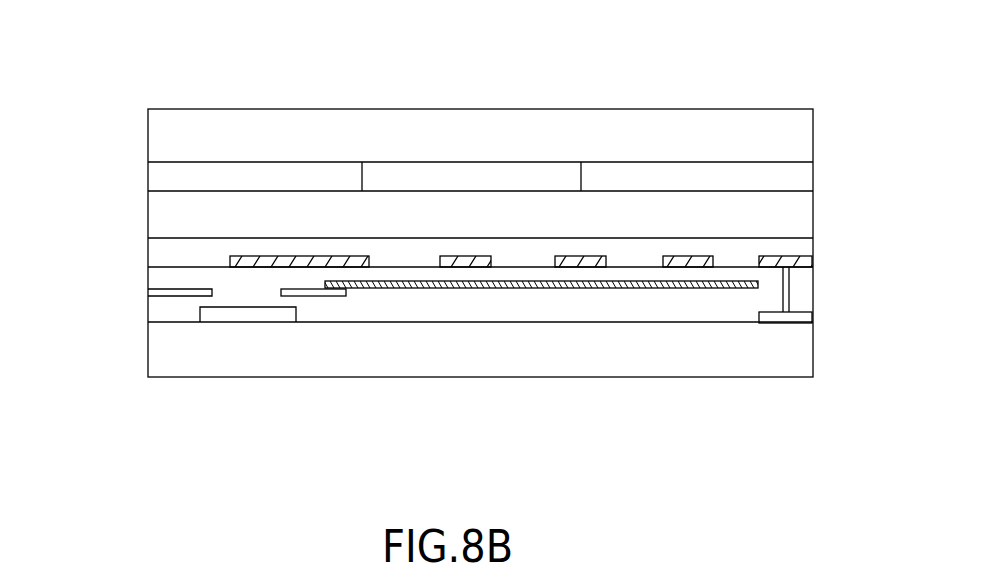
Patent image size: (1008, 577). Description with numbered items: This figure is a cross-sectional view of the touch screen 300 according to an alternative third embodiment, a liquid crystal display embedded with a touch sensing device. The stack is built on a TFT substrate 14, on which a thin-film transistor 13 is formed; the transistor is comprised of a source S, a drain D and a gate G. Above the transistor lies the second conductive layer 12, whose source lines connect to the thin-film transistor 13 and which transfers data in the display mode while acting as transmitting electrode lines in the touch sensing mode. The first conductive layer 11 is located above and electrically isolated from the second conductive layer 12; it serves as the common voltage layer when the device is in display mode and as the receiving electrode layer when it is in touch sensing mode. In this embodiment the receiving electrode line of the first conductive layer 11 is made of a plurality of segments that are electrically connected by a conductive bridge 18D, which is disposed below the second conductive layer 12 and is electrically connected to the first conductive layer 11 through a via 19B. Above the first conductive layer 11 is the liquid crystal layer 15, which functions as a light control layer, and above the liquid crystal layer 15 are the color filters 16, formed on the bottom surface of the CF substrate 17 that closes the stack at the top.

The touch screen 300 is at (95, 54).
The CF substrate 17 is at (163, 134).
The color filters 16 is at (163, 180).
The liquid crystal layer 15 is at (163, 212).
The TFT substrate 14 is at (163, 347).
The thin-film transistor 13 is at (247, 375).
The second conductive layer 12 is at (720, 282).
The first conductive layer 11 is at (790, 263).
The via 19B is at (790, 290).
The conductive bridge 18D is at (800, 317).
The source S is at (172, 294).
The gate G is at (247, 313).
The drain D is at (313, 352).